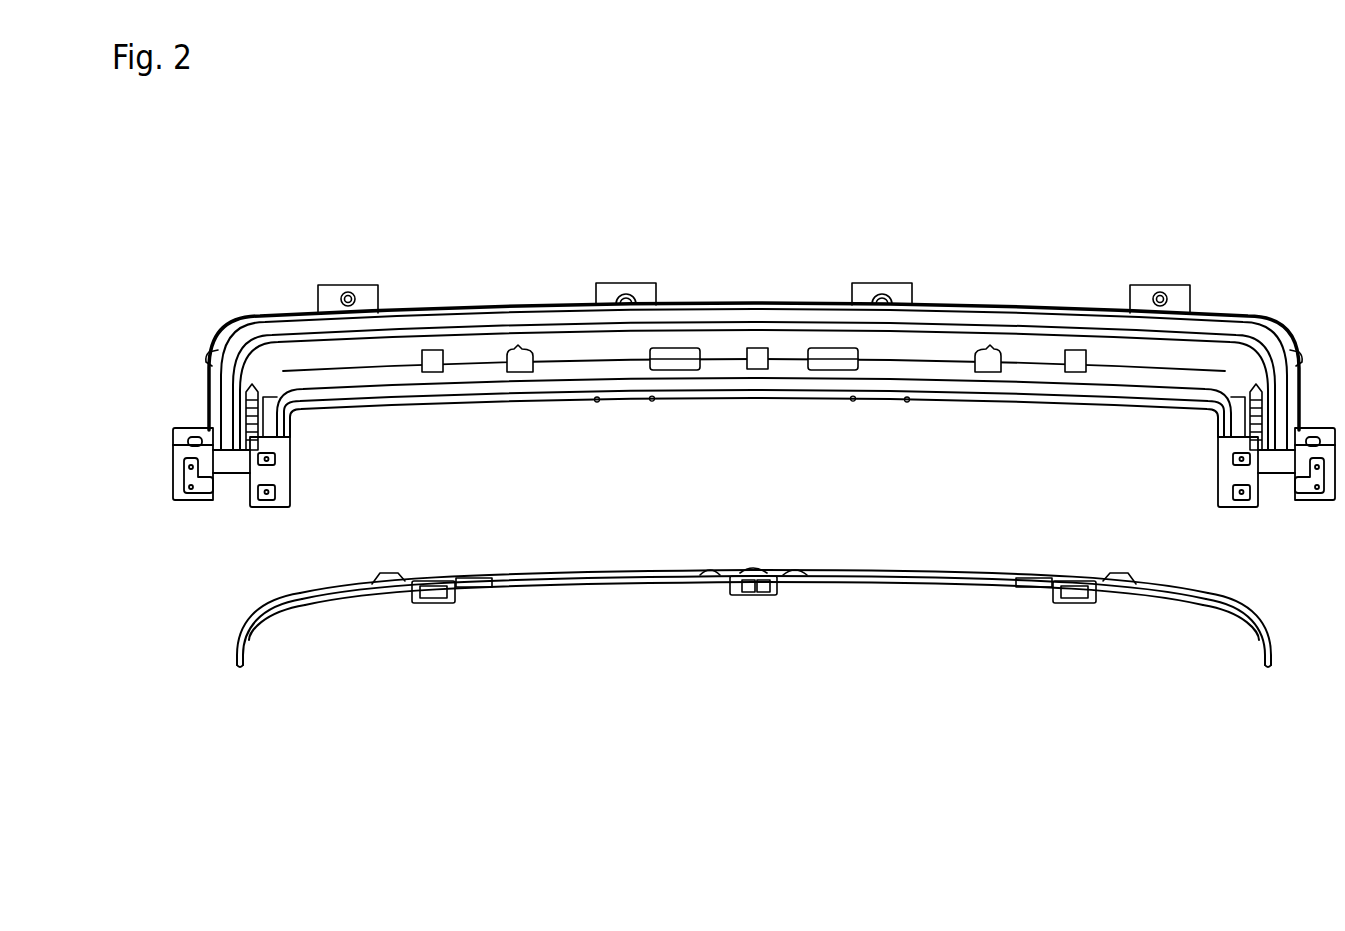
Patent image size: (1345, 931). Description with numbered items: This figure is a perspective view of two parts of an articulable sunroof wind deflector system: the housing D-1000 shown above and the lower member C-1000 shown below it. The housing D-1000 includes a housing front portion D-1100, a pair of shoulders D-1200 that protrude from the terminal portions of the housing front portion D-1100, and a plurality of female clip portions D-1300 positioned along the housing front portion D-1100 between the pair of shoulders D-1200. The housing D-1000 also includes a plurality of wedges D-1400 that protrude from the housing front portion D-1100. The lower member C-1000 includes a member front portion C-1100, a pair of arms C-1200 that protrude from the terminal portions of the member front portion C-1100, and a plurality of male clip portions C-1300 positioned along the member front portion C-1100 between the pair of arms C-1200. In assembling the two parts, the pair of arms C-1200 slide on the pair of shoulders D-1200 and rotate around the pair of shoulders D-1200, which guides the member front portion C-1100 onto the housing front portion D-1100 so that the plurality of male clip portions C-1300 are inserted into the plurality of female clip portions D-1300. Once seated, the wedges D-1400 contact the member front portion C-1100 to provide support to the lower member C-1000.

The housing D-1000 is at (1325, 160).
The housing front portion D-1100 is at (700, 272).
The pair of shoulders D-1200 is at (193, 418).
The plurality of female clip portions D-1300 is at (1057, 422).
The plurality of wedges D-1400 is at (548, 348).
The lower member C-1000 is at (1292, 765).
The member front portion C-1100 is at (832, 565).
The pair of arms C-1200 is at (253, 650).
The plurality of male clip portions C-1300 is at (1068, 620).